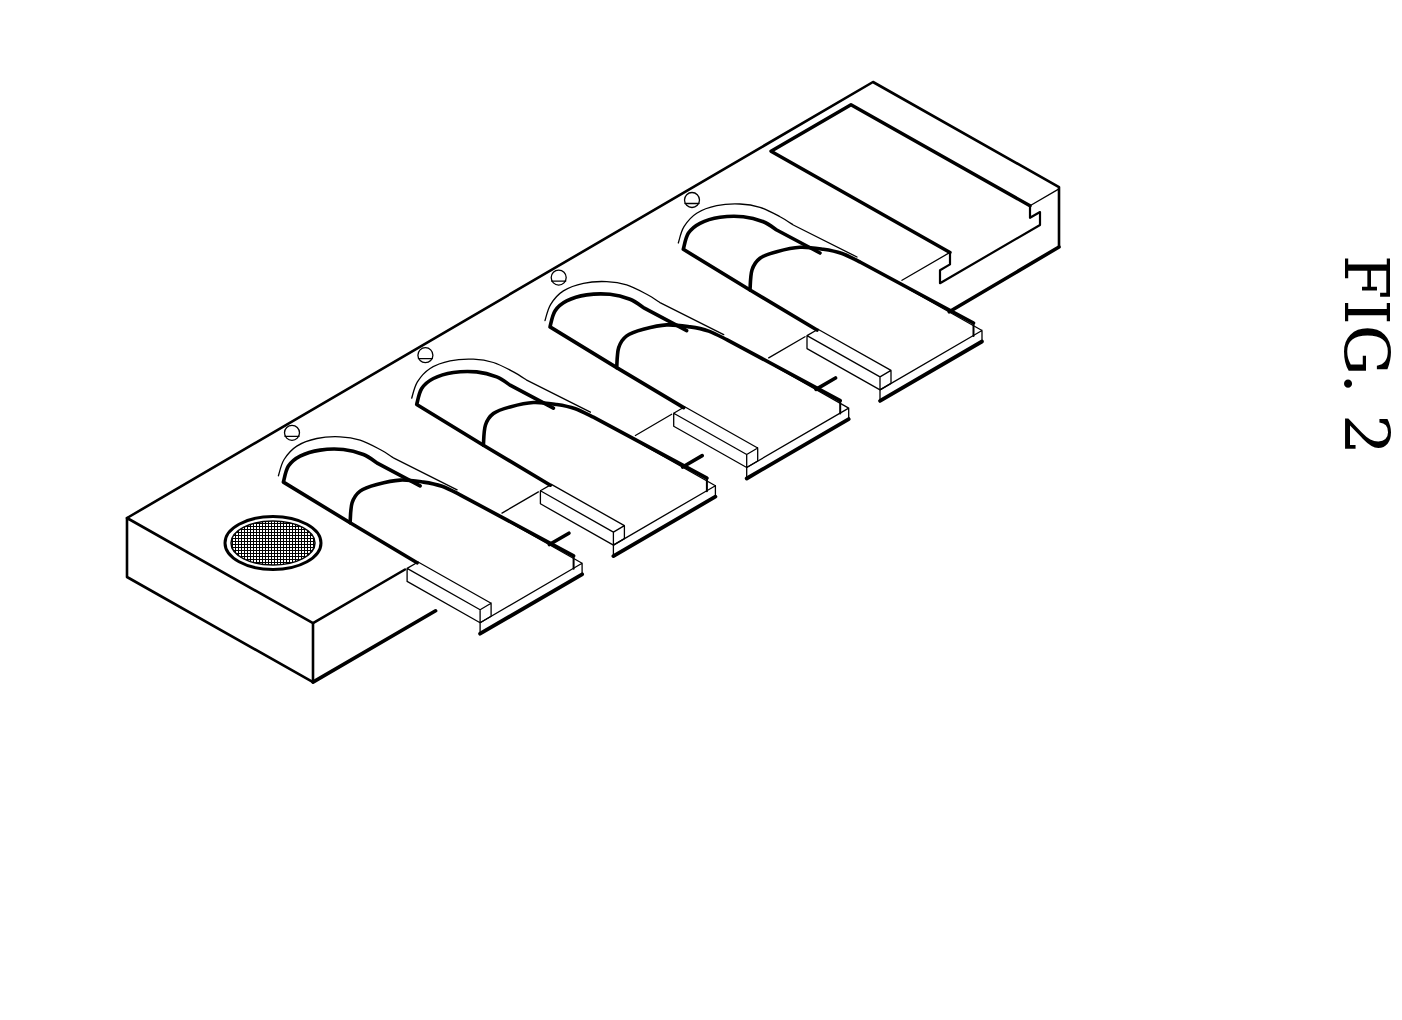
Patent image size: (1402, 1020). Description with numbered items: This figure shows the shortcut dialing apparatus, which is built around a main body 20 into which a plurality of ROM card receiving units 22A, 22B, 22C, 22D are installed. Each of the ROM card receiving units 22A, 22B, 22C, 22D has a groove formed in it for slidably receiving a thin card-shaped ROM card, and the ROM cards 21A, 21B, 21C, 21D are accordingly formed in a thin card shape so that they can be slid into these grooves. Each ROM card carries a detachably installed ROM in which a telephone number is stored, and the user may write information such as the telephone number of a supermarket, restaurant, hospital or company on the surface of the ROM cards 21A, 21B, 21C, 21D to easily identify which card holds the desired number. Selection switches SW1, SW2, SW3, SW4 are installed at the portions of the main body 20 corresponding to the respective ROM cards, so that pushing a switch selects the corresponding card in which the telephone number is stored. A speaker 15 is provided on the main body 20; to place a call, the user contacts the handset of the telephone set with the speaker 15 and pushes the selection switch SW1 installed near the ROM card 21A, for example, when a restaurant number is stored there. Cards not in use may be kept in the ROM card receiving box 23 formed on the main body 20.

The speaker 15 is at (240, 518).
The main body 20 is at (993, 141).
The ROM card 21A is at (923, 365).
The ROM card 21B is at (788, 447).
The ROM card 21C is at (663, 532).
The ROM card 21D is at (532, 609).
The ROM card receiving unit 22A is at (703, 240).
The ROM card receiving unit 22B is at (703, 240).
The ROM card receiving unit 22C is at (505, 386).
The ROM card receiving unit 22D is at (368, 466).
The ROM card receiving box 23 is at (822, 133).
The selection switch SW1 is at (689, 192).
The selection switch SW2 is at (556, 269).
The selection switch SW3 is at (423, 346).
The selection switch SW4 is at (289, 424).